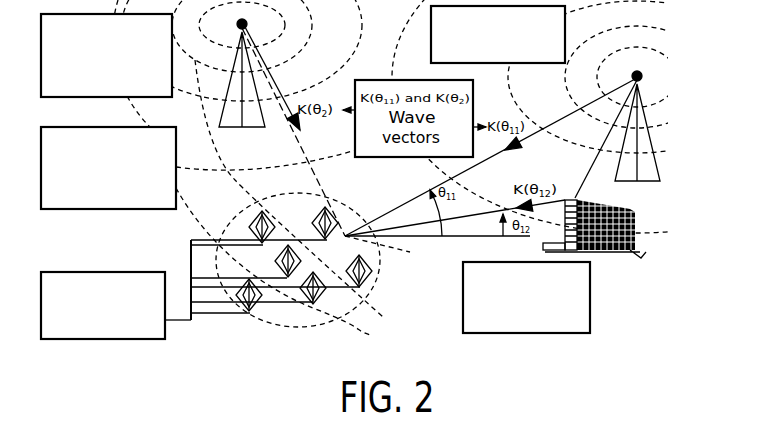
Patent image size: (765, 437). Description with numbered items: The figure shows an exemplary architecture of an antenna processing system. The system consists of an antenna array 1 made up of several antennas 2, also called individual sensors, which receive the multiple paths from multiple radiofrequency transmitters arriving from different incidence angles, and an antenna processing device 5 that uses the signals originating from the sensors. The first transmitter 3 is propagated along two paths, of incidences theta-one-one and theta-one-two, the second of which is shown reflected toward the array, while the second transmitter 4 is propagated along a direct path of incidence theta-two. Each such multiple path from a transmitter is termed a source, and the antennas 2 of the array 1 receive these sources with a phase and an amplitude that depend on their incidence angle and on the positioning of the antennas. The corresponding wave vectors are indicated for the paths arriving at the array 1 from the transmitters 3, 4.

The antenna array 1 is at (362, 295).
The individual sensor 2 is at (248, 216).
The first transmitter 3 is at (628, 74).
The second transmitter 4 is at (235, 24).
The antenna processing device 5 is at (200, 289).